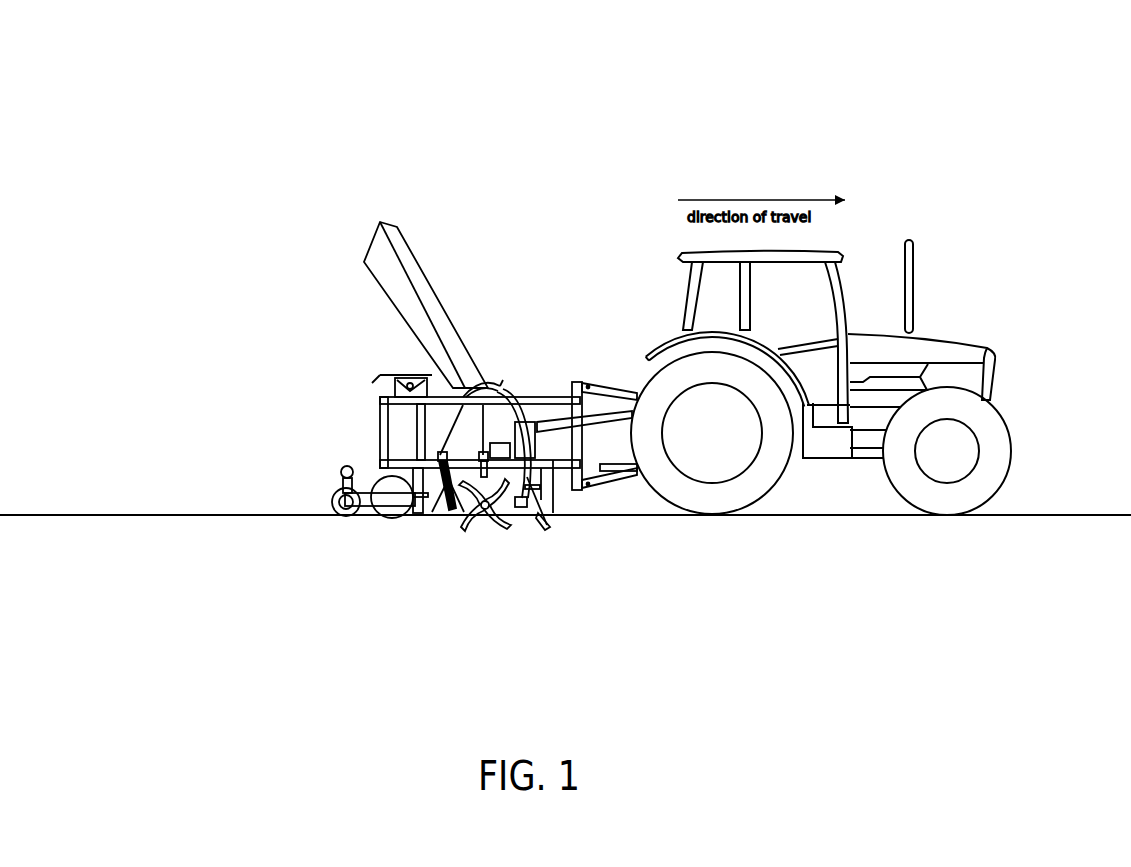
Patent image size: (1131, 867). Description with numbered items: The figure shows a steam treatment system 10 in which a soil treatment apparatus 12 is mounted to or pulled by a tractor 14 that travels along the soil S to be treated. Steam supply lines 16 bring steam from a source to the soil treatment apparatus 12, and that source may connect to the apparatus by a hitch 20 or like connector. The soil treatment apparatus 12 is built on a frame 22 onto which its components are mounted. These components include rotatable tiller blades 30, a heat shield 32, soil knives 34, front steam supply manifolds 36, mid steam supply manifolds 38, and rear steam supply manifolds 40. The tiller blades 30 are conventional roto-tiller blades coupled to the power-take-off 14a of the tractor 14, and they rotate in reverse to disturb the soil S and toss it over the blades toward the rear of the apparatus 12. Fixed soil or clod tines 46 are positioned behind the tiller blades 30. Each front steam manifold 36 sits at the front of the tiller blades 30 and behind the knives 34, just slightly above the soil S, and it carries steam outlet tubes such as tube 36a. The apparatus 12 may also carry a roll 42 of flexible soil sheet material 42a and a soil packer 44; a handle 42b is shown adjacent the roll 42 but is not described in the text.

The steam treatment system 10 is at (488, 345).
The soil treatment apparatus 12 is at (488, 380).
The tractor 14 is at (827, 377).
The power-take-off 14a is at (607, 498).
The steam supply lines 16 is at (421, 361).
The hitch 20 is at (331, 331).
The frame 22 is at (637, 469).
The rotatable tiller blades 30 is at (569, 601).
The heat shield 32 is at (356, 464).
The soil knives 34 is at (590, 537).
The front steam supply manifolds 36 is at (579, 583).
The steam outlet tube 36a is at (588, 583).
The mid steam supply manifolds 38 is at (354, 400).
The rear steam supply manifolds 40 is at (348, 407).
The roll of flexible soil sheet material 42 is at (293, 527).
The flexible soil sheet material 42a is at (217, 482).
The adjustment handle 42b is at (255, 454).
The soil packer 44 is at (357, 542).
The fixed soil or clod tines 46 is at (404, 556).
The soil S is at (565, 462).